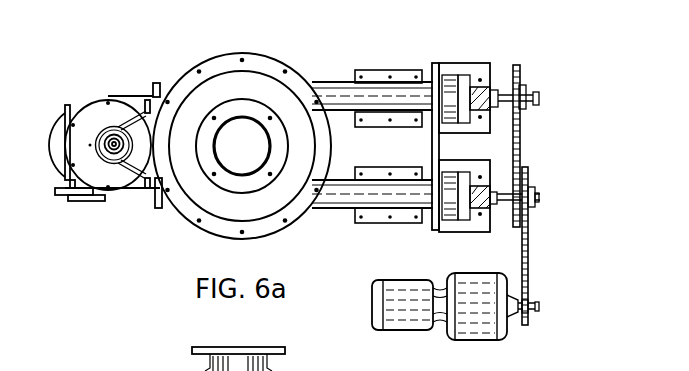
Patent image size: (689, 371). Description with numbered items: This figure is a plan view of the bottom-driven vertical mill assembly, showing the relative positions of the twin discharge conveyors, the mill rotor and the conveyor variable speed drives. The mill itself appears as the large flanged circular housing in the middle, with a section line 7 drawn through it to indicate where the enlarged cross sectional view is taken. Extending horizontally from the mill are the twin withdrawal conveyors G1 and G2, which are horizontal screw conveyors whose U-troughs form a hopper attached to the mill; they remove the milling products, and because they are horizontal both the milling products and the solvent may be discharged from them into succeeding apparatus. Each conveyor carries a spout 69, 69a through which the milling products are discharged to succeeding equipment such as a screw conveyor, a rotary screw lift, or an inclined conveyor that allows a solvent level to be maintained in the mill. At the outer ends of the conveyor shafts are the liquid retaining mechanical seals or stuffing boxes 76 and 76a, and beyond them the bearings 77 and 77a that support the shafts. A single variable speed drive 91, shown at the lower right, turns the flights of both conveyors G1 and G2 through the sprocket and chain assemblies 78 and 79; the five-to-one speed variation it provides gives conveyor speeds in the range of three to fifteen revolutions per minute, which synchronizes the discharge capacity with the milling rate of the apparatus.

The section line 7— 7 is at (340, 146).
The discharge spout 69a is at (382, 70).
The discharge spout 69 is at (410, 223).
The mechanical seal 76a is at (448, 63).
The mechanical seal 76 is at (450, 172).
The bearing 77a is at (490, 88).
The bearing 77 is at (467, 213).
The sprocket and chain assembly 78 is at (528, 170).
The sprocket and chain assembly 79 is at (520, 142).
The variable speed drive 91 is at (477, 340).
The withdrawal conveyor G1 is at (347, 113).
The withdrawal conveyor G2 is at (318, 208).